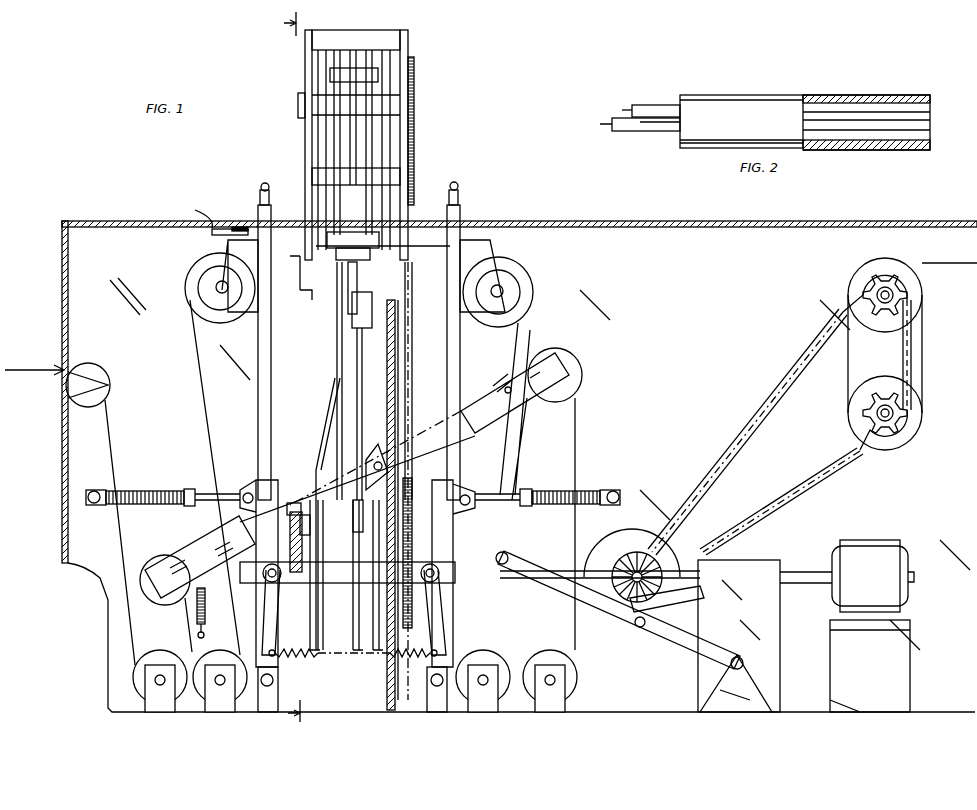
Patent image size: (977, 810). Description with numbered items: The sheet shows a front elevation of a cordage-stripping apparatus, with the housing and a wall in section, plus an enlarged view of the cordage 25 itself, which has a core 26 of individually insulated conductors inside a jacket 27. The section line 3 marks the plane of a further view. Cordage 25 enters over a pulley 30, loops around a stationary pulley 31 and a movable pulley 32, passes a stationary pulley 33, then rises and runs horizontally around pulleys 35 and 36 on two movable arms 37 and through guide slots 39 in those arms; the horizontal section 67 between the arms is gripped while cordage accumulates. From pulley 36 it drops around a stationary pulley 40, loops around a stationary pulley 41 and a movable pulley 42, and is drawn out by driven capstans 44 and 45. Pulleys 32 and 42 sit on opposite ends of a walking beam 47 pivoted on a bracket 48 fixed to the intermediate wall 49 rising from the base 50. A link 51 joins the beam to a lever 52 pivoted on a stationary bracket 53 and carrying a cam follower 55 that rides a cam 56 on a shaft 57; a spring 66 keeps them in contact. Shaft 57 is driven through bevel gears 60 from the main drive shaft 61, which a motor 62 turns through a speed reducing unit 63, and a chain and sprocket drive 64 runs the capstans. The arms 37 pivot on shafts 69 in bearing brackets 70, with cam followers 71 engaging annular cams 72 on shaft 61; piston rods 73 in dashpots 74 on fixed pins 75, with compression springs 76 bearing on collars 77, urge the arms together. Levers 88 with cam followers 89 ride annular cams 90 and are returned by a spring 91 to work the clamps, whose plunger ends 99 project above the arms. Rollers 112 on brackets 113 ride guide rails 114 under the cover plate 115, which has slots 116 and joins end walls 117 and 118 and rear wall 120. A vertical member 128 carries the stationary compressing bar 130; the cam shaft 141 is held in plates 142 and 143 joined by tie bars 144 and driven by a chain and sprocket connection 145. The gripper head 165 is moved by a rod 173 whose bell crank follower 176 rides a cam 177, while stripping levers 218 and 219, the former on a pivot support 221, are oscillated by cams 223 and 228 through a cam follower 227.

In FIG. 1, the section line 3 is at (285, 367).
In FIG. 1, the cordage 25 is at (196, 372).
In FIG. 2, the cordage 25 is at (752, 96).
In FIG. 2, the core 26 is at (665, 118).
In FIG. 2, the jacket 27 is at (880, 96).
In FIG. 1, the pulley 30 is at (102, 380).
In FIG. 1, the stationary pulley 31 is at (164, 652).
In FIG. 1, the movable pulley 32 is at (164, 556).
In FIG. 1, the stationary pulley 33 is at (230, 652).
In FIG. 1, the pulley 35 is at (238, 315).
In FIG. 1, the pulley 36 is at (520, 276).
In FIG. 1, the movable arms 37 is at (250, 372).
In FIG. 1, the guide slots 39 is at (271, 262).
In FIG. 1, the stationary pulley 40 is at (502, 652).
In FIG. 1, the stationary pulley 41 is at (560, 652).
In FIG. 1, the movable pulley 42 is at (570, 358).
In FIG. 1, the driven capstan 44 is at (922, 280).
In FIG. 1, the driven capstan 45 is at (922, 412).
In FIG. 1, the walking beam 47 is at (502, 390).
In FIG. 1, the bracket 48 is at (402, 444).
In FIG. 1, the intermediate wall 49 is at (387, 366).
In FIG. 1, the base 50 is at (946, 709).
In FIG. 1, the link 51 is at (520, 441).
In FIG. 1, the lever 52 is at (560, 588).
In FIG. 1, the stationary bracket 53 is at (760, 690).
In FIG. 1, the cam follower 55 is at (640, 628).
In FIG. 1, the cam 56 is at (618, 534).
In FIG. 1, the shaft 57 is at (620, 570).
In FIG. 1, the bevel gears 60 is at (652, 562).
In FIG. 1, the main drive shaft 61 is at (688, 598).
In FIG. 1, the motor 62 is at (886, 546).
In FIG. 1, the speed reducing unit 63 is at (782, 599).
In FIG. 1, the chain and sprocket drive 64 is at (735, 538).
In FIG. 1, the spring 66 is at (205, 602).
In FIG. 1, the horizontal section 67 is at (306, 258).
In FIG. 1, the shafts 69 is at (274, 682).
In FIG. 1, the bearing brackets 70 is at (279, 668).
In FIG. 1, the cam followers 71 is at (262, 570).
In FIG. 1, the annular cams 72 is at (294, 512).
In FIG. 1, the piston rods 73 is at (212, 502).
In FIG. 1, the dashpots 74 is at (102, 506).
In FIG. 1, the fixed pins 75 is at (88, 506).
In FIG. 1, the compression springs 76 is at (148, 490).
In FIG. 1, the collars 77 is at (190, 489).
In FIG. 1, the levers 88 is at (276, 634).
In FIG. 1, the cam followers 89 is at (265, 580).
In FIG. 1, the annular cams 90 is at (287, 530).
In FIG. 1, the spring 91 is at (316, 660).
In FIG. 1, the reduced upper end portion 99 is at (270, 196).
In FIG. 1, the rollers 112 is at (240, 227).
In FIG. 1, the brackets 113 is at (232, 252).
In FIG. 1, the guide rails 114 is at (212, 233).
In FIG. 1, the cover plate 115 is at (137, 221).
In FIG. 1, the slots 116 is at (202, 209).
In FIG. 1, the end wall 117 is at (68, 305).
In FIG. 1, the end wall 118 is at (967, 315).
In FIG. 1, the rear wall 120 is at (568, 227).
In FIG. 1, the vertical member 128 is at (372, 302).
In FIG. 1, the bar 130 is at (375, 258).
In FIG. 1, the cam shaft 141 is at (298, 102).
In FIG. 1, the vertical plate 142 is at (404, 50).
In FIG. 1, the vertical plate 143 is at (305, 60).
In FIG. 1, the tie bars 144 is at (400, 36).
In FIG. 1, the chain and sprocket connection 145 is at (414, 104).
In FIG. 1, the gripper head 165 is at (348, 318).
In FIG. 1, the rod 173 is at (360, 356).
In FIG. 1, the cam follower 176 is at (366, 526).
In FIG. 1, the cam 177 is at (401, 673).
In FIG. 1, the stripping lever 218 is at (336, 344).
In FIG. 1, the stripping lever 219 is at (325, 412).
In FIG. 1, the pivot support 221 is at (372, 460).
In FIG. 1, the cam 223 is at (378, 652).
In FIG. 1, the cam follower 227 is at (324, 538).
In FIG. 1, the cam 228 is at (326, 632).